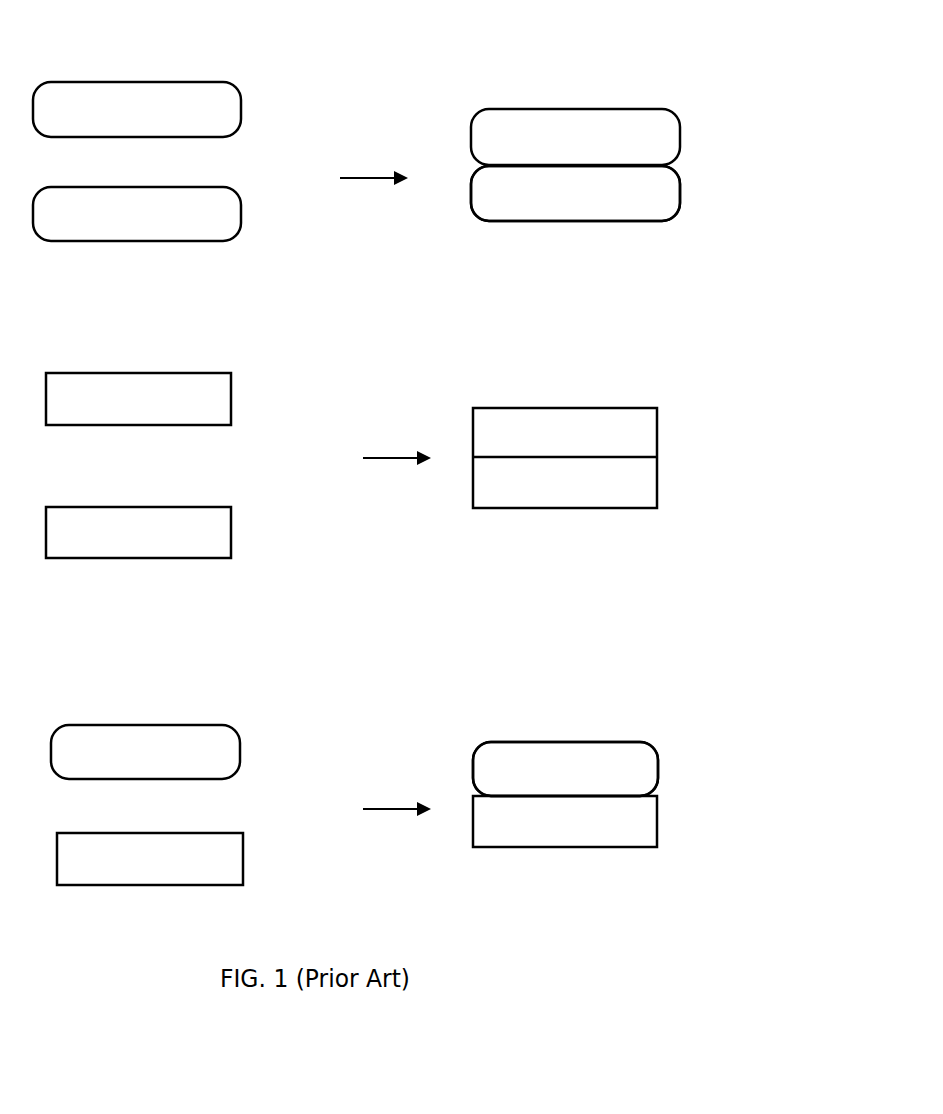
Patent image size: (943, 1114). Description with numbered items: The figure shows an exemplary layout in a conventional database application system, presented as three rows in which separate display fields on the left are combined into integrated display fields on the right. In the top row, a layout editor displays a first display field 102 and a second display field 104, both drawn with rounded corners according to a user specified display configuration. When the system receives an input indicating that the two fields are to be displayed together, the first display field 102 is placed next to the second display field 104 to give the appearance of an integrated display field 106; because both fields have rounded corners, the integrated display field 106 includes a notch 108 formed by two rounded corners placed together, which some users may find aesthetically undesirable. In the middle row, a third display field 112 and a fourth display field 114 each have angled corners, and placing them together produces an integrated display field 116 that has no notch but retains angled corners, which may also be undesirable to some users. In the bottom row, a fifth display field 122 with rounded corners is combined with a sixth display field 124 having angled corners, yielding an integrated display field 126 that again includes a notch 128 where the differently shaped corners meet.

The first display field 102 is at (175, 82).
The second display field 104 is at (193, 187).
The integrated display field 106 is at (521, 64).
The notch 108 is at (677, 170).
The third display field 112 is at (188, 373).
The fourth display field 114 is at (200, 507).
The integrated display field 116 is at (536, 368).
The fifth display field 122 is at (207, 725).
The sixth display field 124 is at (217, 833).
The integrated display field 126 is at (520, 710).
The notch 128 is at (657, 787).